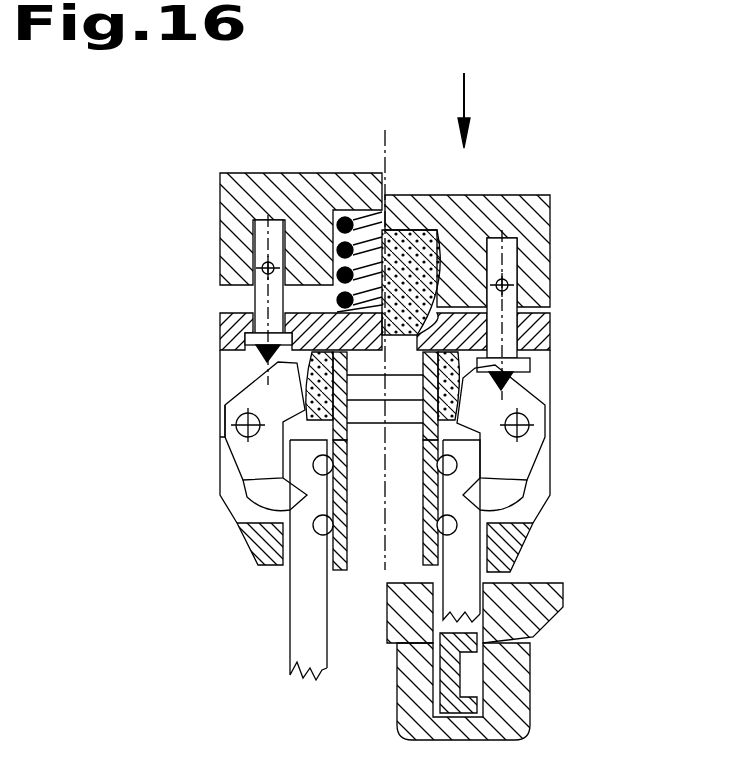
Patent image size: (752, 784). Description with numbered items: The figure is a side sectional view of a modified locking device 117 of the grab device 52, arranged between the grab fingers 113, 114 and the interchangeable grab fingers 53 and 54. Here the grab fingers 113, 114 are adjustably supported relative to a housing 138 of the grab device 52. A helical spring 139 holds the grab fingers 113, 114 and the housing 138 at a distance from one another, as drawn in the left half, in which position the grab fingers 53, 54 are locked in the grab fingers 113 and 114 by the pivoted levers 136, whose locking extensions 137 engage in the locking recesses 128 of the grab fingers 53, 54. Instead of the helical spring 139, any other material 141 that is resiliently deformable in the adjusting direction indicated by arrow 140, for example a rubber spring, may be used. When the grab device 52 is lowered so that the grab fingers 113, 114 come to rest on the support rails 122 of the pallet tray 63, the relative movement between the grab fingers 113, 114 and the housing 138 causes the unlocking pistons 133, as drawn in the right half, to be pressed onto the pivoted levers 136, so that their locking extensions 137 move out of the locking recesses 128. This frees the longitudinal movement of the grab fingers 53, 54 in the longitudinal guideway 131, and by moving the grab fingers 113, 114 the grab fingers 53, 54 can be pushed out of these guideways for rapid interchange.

The grab device 52 is at (562, 146).
The grab finger 53 is at (298, 618).
The grab finger 54 is at (462, 671).
The pallet tray 63 is at (548, 600).
The grab finger 113 is at (535, 540).
The grab finger 114 is at (243, 535).
The locking device 117 is at (166, 424).
The support rail 122 is at (530, 578).
The locking recess 128 is at (428, 482).
The longitudinal guideway 131 is at (415, 487).
The unlocking piston 133 is at (495, 300).
The pivoted lever 136 is at (232, 392).
The locking extension 137 is at (283, 500).
The housing 138 is at (548, 220).
The helical spring 139 is at (343, 214).
The arrow 140 is at (474, 98).
The resiliently deformable material 141 is at (410, 262).